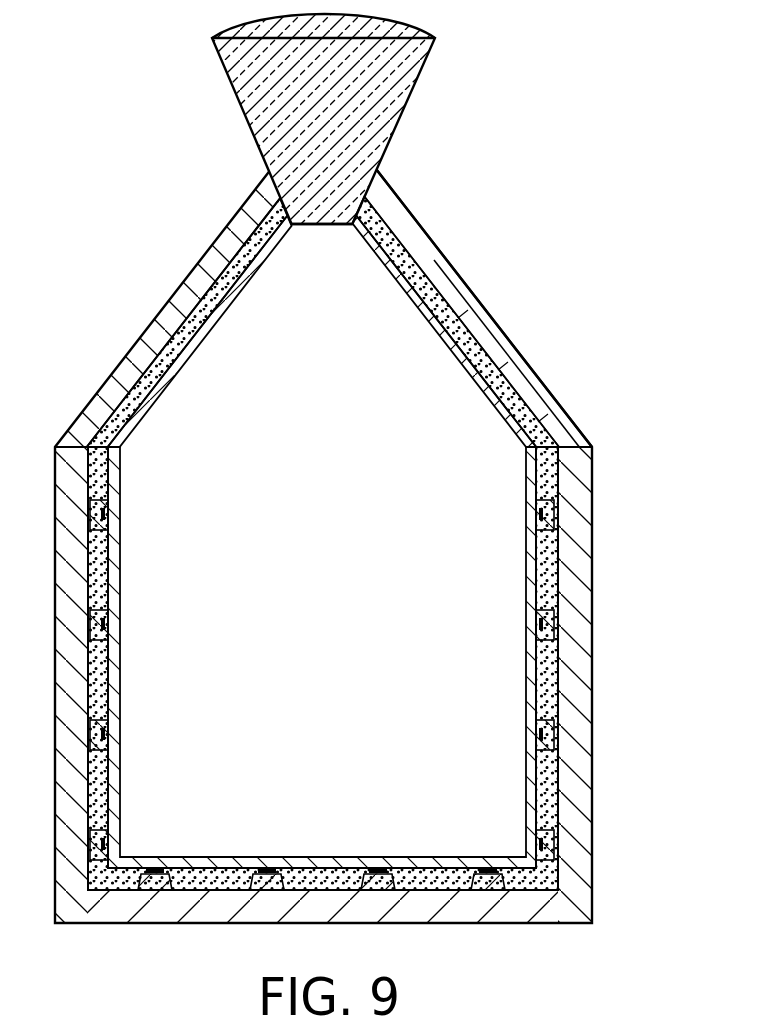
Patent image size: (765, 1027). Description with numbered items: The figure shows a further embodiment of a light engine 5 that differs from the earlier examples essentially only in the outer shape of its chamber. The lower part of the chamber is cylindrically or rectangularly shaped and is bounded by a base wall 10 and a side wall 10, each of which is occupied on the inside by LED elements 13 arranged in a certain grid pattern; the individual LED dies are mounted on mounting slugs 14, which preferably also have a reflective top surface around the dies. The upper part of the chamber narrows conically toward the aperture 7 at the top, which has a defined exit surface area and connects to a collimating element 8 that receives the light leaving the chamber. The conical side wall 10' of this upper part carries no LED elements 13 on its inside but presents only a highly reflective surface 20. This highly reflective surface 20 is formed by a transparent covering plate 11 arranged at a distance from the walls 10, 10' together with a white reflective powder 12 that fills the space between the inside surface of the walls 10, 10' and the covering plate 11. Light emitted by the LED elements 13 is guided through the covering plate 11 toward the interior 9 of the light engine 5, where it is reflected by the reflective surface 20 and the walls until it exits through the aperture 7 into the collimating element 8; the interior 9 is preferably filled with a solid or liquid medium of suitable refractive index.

The light engine 5 is at (528, 91).
The aperture 7 is at (300, 224).
The collimating element 8 is at (362, 157).
The interior 9 is at (433, 406).
The wall 10 is at (353, 546).
The conical side wall 10' is at (506, 353).
The transparent covering plate 11 is at (168, 380).
The white reflective powder 12 is at (549, 400).
The LED elements 13 is at (105, 617).
The mounting slugs 14 is at (105, 497).
The highly reflective surface 20 is at (383, 278).